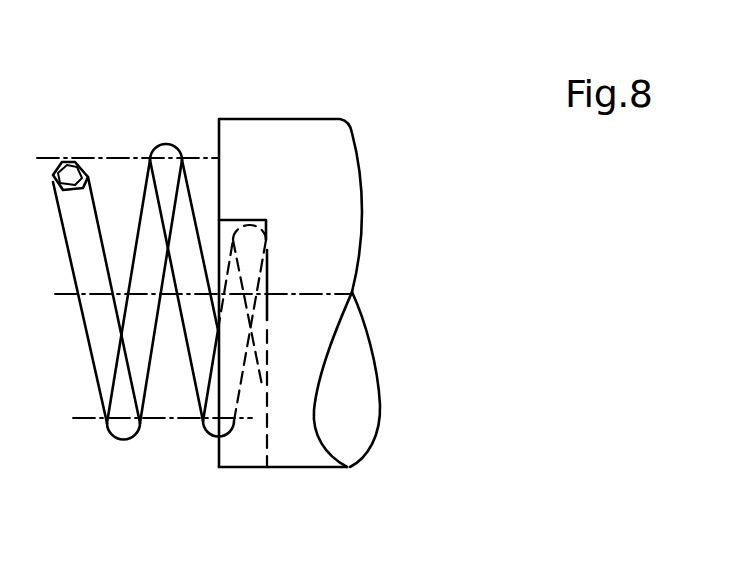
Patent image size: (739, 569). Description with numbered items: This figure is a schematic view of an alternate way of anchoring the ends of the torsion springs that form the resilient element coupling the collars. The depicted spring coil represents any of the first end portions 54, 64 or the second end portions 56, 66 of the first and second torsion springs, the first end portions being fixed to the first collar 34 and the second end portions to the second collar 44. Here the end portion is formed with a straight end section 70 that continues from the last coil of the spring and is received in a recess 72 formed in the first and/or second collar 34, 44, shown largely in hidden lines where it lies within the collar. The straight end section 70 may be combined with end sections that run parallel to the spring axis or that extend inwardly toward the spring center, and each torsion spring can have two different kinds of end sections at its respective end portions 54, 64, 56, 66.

The first end portion 54 is at (137, 239).
The first end portion 64 is at (137, 239).
The second end portion 56 is at (137, 239).
The second end portion 66 is at (165, 146).
The first collar 34 is at (319, 253).
The second collar 44 is at (303, 138).
The straight end section 70 is at (238, 312).
The recess 72 is at (264, 255).